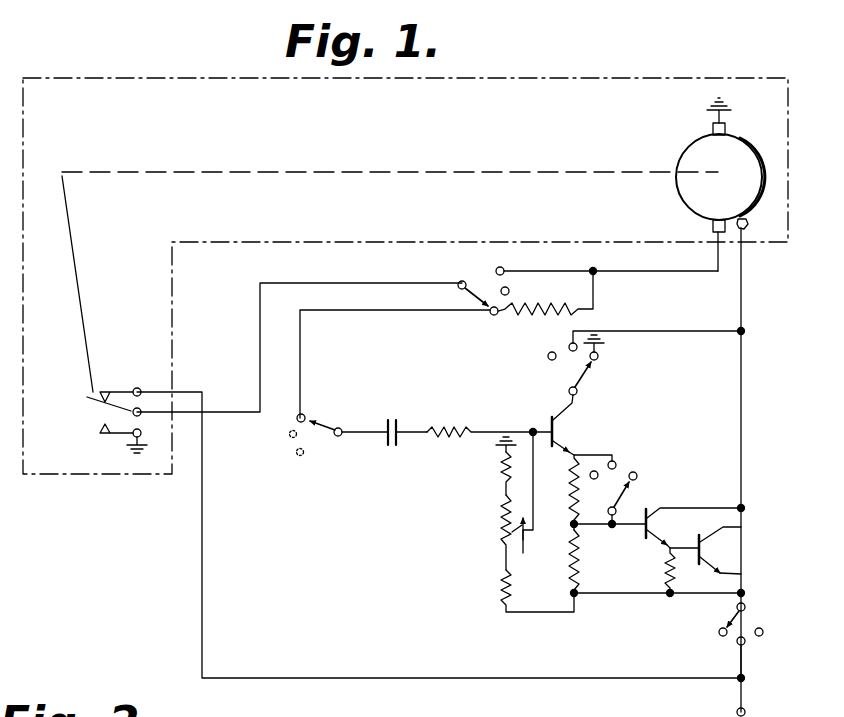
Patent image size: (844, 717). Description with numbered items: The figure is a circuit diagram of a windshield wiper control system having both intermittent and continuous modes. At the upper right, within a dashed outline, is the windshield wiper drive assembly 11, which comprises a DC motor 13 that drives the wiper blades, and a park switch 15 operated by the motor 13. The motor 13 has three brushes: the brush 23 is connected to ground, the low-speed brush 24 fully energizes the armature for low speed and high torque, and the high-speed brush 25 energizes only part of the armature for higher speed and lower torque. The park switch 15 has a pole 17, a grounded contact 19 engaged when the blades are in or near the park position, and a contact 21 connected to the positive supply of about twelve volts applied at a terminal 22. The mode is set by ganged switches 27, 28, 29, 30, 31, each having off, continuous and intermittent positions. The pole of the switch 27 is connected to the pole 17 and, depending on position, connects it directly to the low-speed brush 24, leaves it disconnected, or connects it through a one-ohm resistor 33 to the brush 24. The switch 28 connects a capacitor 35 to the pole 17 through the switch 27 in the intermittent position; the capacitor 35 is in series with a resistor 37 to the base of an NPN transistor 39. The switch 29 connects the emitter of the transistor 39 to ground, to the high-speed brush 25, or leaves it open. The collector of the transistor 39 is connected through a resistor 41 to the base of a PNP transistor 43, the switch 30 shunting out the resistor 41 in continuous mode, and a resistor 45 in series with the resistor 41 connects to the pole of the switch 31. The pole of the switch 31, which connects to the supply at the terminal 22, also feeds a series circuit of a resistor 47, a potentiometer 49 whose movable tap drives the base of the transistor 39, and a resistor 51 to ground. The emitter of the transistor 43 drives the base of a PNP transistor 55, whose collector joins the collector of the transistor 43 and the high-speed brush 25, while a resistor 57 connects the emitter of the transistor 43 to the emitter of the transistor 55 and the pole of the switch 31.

The windshield wiper drive assembly 11 is at (138, 80).
The DC motor 13 is at (690, 150).
The park switch 15 is at (95, 409).
The pole 17 is at (126, 392).
The grounded contact 19 is at (112, 440).
The contact 21 is at (104, 388).
The terminal 22 is at (736, 713).
The brush 23 is at (727, 126).
The low-speed brush 24 is at (712, 228).
The high-speed brush 25 is at (746, 222).
The switch 27 is at (480, 290).
The switch 28 is at (326, 416).
The switch 29 is at (590, 373).
The switch 30 is at (622, 499).
The switch 31 is at (728, 616).
The resistor 33 is at (556, 300).
The capacitor 35 is at (401, 425).
The resistor 37 is at (452, 420).
The NPN transistor 39 is at (550, 418).
The resistor 41 is at (571, 492).
The PNP transistor 43 is at (641, 533).
The resistor 45 is at (569, 553).
The resistor 47 is at (500, 593).
The potentiometer 49 is at (499, 520).
The resistor 51 is at (499, 468).
The PNP transistor 55 is at (707, 553).
The resistor 57 is at (664, 575).